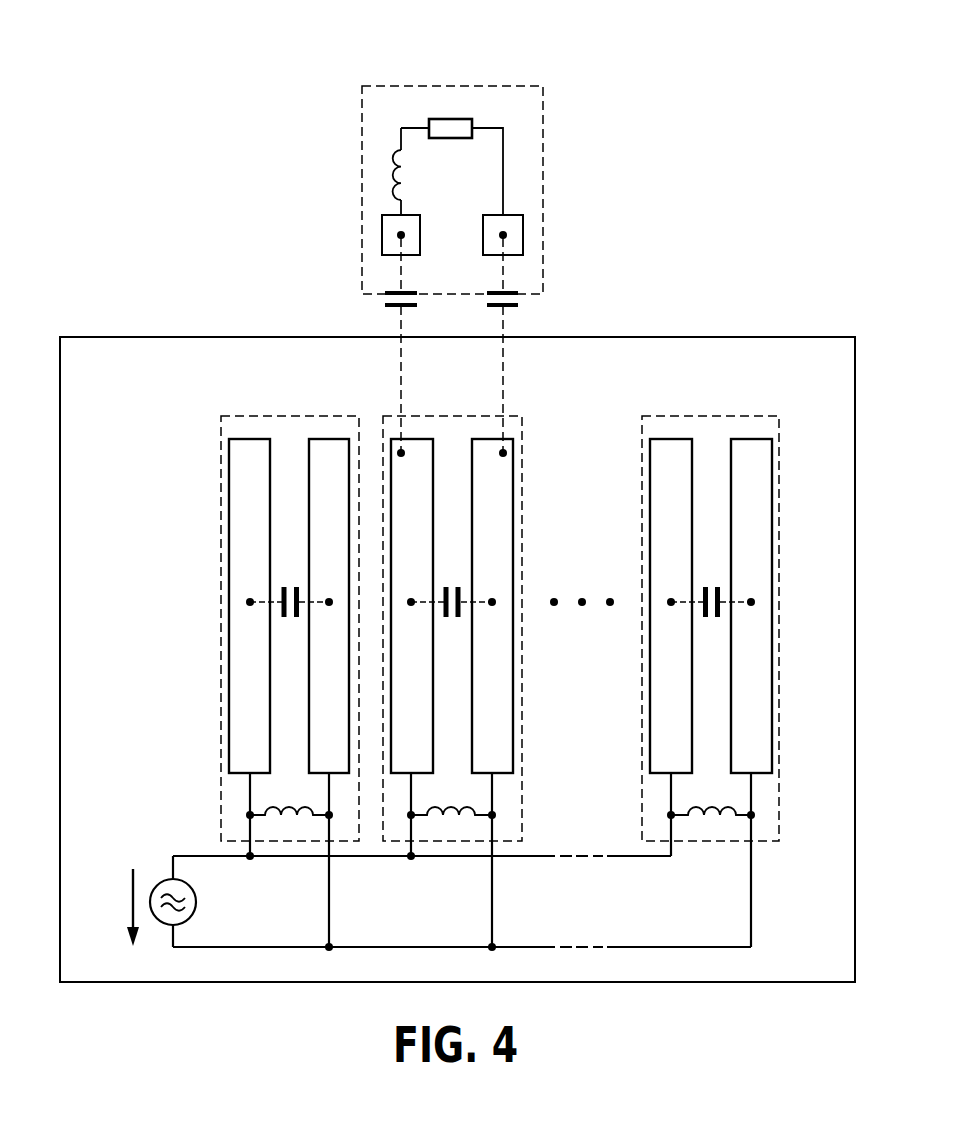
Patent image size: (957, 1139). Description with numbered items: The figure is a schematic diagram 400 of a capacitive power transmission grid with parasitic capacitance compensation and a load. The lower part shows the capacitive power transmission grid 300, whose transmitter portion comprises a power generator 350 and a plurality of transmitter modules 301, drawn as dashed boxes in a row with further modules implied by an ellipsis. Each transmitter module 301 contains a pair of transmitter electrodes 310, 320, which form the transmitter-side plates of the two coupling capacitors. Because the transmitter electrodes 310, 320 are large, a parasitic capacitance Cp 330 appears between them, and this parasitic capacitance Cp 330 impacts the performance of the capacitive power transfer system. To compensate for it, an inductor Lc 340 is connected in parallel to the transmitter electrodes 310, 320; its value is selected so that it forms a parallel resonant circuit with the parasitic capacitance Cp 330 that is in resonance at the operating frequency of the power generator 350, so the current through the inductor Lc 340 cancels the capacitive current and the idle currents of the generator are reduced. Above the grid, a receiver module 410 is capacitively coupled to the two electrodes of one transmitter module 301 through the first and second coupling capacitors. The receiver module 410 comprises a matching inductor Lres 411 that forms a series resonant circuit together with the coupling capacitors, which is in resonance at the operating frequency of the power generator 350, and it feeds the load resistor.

The schematic diagram 400 is at (150, 130).
The receiver module 410 is at (490, 85).
The matching inductor 411 is at (390, 173).
The capacitive power transmission grid 300 is at (767, 335).
The transmitter module 301 is at (288, 414).
The transmitter electrode 310 is at (263, 494).
The transmitter electrode 320 is at (346, 494).
The parasitic capacitance Cp 330 is at (290, 620).
The inductor Lc 340 is at (288, 817).
The power generator 350 is at (163, 880).